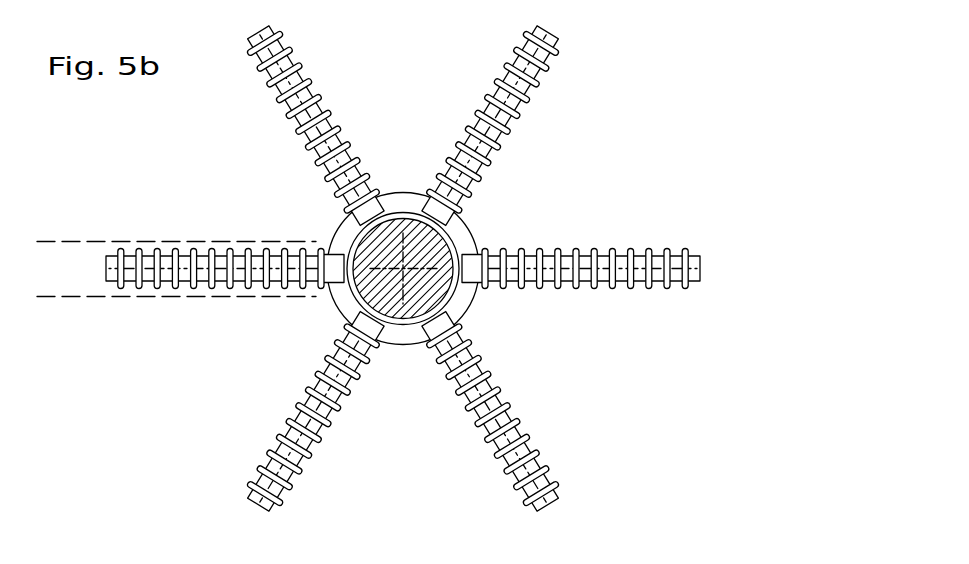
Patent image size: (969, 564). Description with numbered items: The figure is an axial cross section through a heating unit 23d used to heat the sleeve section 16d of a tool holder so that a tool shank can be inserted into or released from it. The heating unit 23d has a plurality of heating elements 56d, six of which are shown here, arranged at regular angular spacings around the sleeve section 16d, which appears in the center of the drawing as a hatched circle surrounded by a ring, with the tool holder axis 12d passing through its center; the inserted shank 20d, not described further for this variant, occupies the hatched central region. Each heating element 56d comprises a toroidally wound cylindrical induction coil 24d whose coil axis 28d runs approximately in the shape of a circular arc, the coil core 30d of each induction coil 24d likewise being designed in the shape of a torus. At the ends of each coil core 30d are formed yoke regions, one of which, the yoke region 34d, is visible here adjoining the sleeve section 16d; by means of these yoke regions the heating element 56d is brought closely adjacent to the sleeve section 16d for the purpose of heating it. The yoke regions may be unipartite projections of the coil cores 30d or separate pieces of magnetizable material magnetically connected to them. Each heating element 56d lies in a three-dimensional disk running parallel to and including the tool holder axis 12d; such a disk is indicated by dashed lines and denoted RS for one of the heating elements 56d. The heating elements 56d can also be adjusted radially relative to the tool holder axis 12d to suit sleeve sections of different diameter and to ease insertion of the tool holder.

The tool holder axis 12d is at (398, 265).
The sleeve section 16d is at (400, 334).
The hub 20d is at (404, 311).
The heating unit 23d is at (425, 282).
The induction coil 24d is at (425, 282).
The coil axis 28d is at (425, 282).
The coil core 30d is at (540, 65).
The yoke region 34d is at (381, 209).
The heating element 56d is at (688, 247).
The three-dimensional disk RS is at (68, 298).